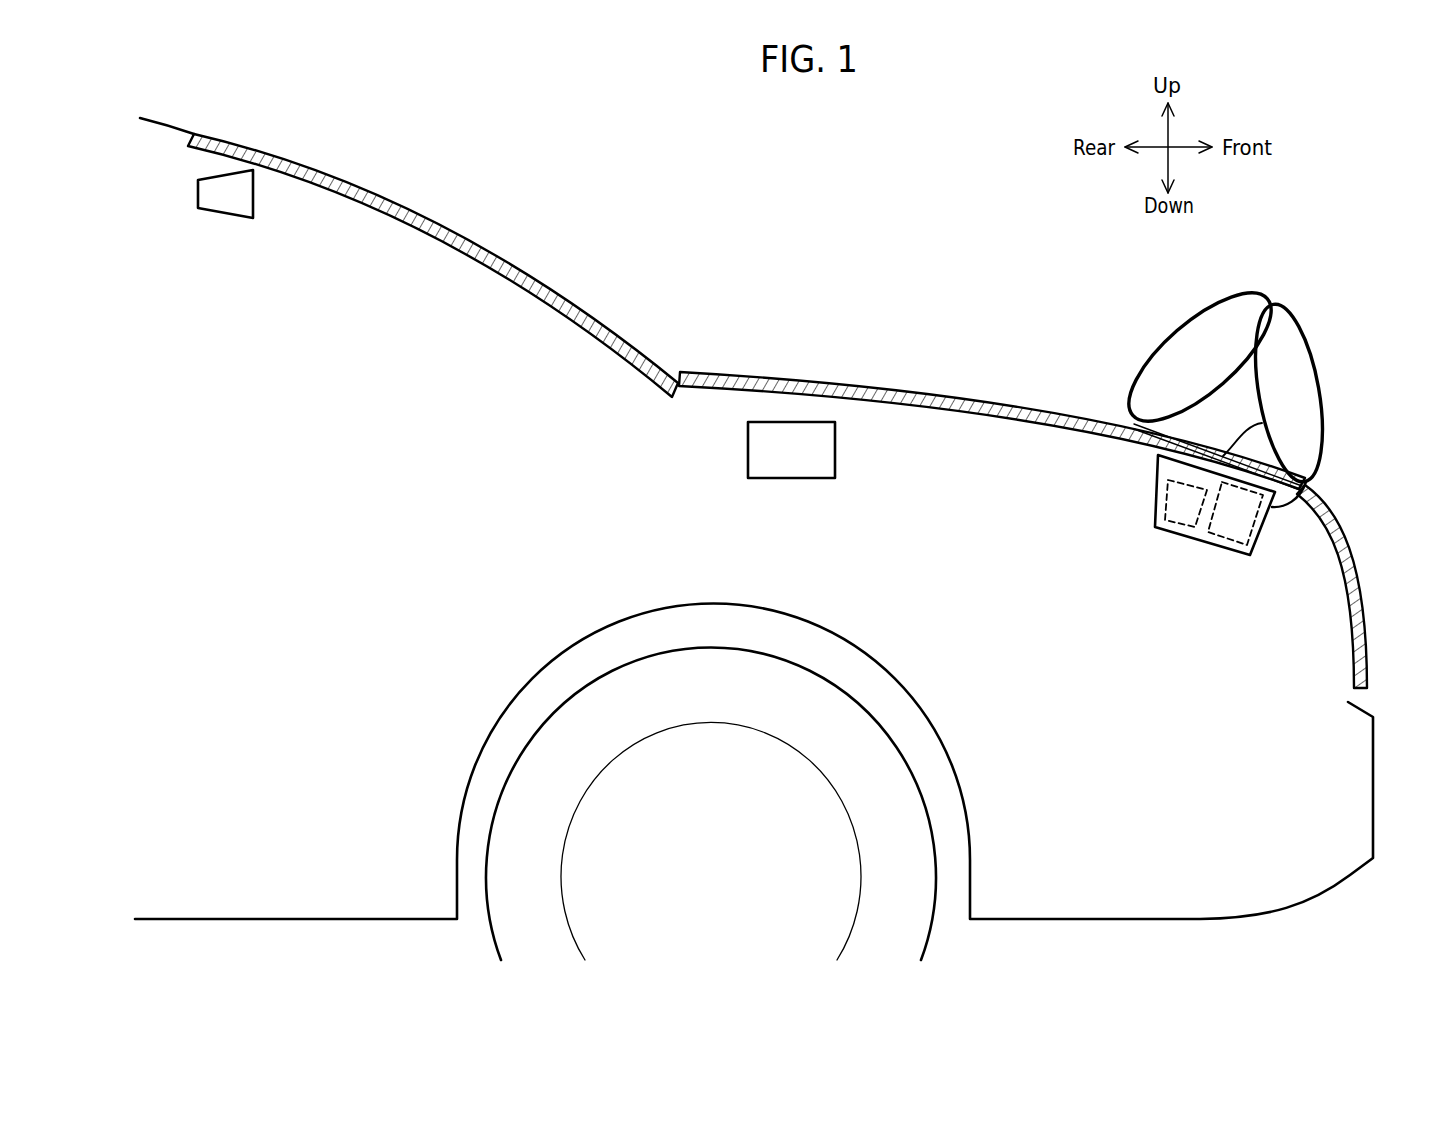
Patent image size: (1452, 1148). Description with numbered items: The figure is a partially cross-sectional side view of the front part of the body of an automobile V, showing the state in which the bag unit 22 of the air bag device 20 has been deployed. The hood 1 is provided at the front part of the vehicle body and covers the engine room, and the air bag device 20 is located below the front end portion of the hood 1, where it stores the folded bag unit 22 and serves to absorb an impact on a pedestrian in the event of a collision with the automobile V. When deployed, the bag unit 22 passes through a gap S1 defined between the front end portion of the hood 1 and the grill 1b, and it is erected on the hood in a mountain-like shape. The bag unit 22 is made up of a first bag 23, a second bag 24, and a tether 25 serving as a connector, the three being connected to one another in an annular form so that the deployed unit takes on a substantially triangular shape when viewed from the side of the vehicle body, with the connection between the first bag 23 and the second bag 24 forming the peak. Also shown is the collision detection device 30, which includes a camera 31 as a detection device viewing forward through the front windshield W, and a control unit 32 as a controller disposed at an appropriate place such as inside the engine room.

The automobile V is at (798, 245).
The front windshield W is at (455, 228).
The hood 1 is at (912, 395).
The grill 1b is at (1362, 590).
The air bag device 20 is at (1200, 560).
The bag unit 22 is at (1253, 358).
The first bag 23 is at (1313, 373).
The second bag 24 is at (1185, 337).
The tether 25 is at (1262, 423).
The gap S1 is at (1320, 482).
The collision detection device 30 is at (519, 361).
The camera 31 is at (222, 216).
The control unit 32 is at (790, 480).